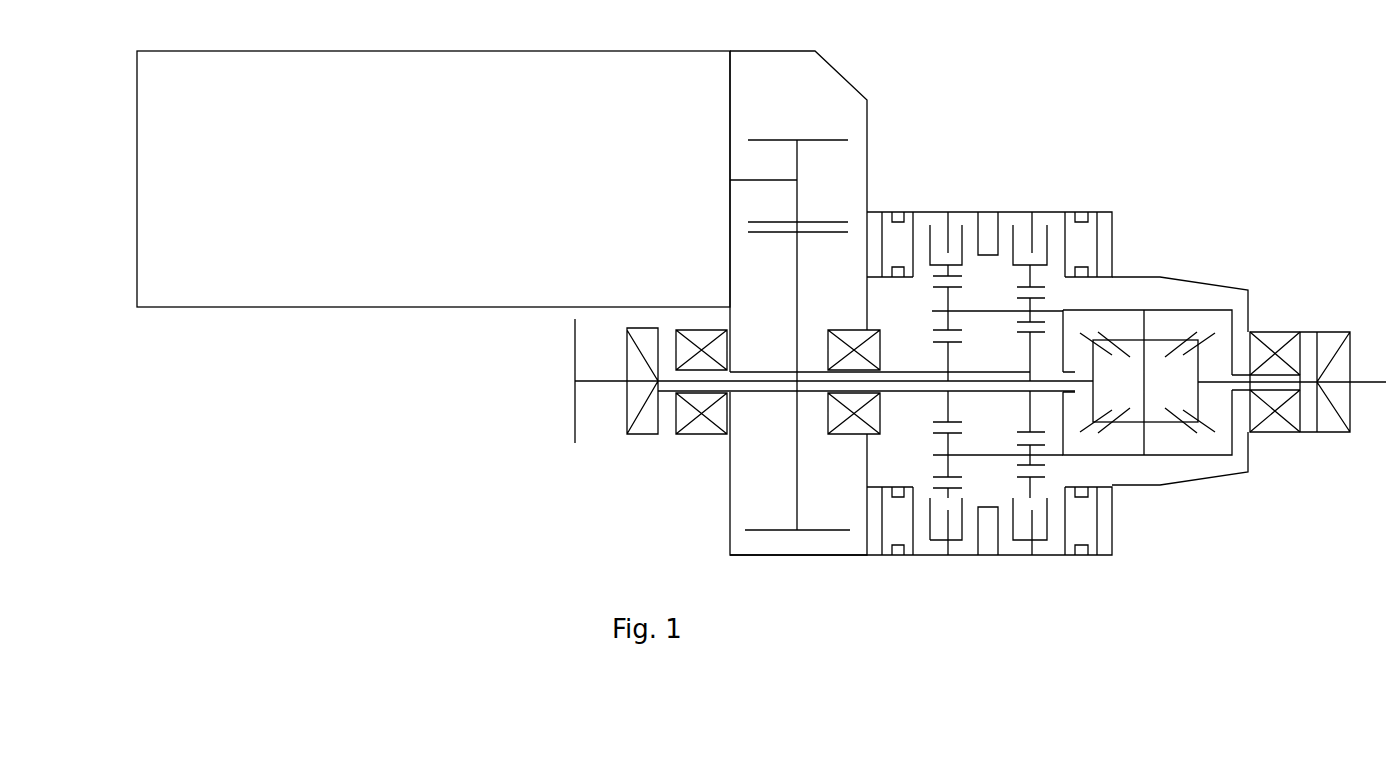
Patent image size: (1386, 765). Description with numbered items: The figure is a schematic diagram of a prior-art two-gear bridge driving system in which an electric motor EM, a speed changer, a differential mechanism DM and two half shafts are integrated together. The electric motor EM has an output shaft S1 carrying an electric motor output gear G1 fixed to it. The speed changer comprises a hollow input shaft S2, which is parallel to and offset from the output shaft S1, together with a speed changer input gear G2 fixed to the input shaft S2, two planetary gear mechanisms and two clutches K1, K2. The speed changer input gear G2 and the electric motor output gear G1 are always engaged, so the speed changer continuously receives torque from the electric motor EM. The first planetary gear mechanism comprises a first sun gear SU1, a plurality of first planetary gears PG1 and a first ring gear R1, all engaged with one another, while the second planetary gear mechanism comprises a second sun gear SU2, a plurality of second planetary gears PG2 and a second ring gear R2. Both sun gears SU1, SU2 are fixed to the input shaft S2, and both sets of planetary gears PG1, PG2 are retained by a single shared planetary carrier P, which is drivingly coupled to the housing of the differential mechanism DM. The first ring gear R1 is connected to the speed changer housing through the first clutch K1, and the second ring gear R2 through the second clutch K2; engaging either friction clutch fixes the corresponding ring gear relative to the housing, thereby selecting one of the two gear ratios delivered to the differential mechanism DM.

The electric motor EM is at (433, 179).
The electric motor output gear G1 is at (798, 154).
The output shaft S1 is at (763, 192).
The speed changer input gear G2 is at (798, 242).
The input shaft S2 is at (797, 335).
The first clutch K1 is at (957, 224).
The second clutch K2 is at (1040, 224).
The first ring gear R1 is at (963, 377).
The second ring gear R2 is at (1041, 371).
The first planetary gears PG1 is at (977, 381).
The second planetary gears PG2 is at (1001, 381).
The first sun gear SU1 is at (931, 381).
The second sun gear SU2 is at (1014, 383).
The planetary carrier P is at (1066, 302).
The differential mechanism DM is at (1147, 382).